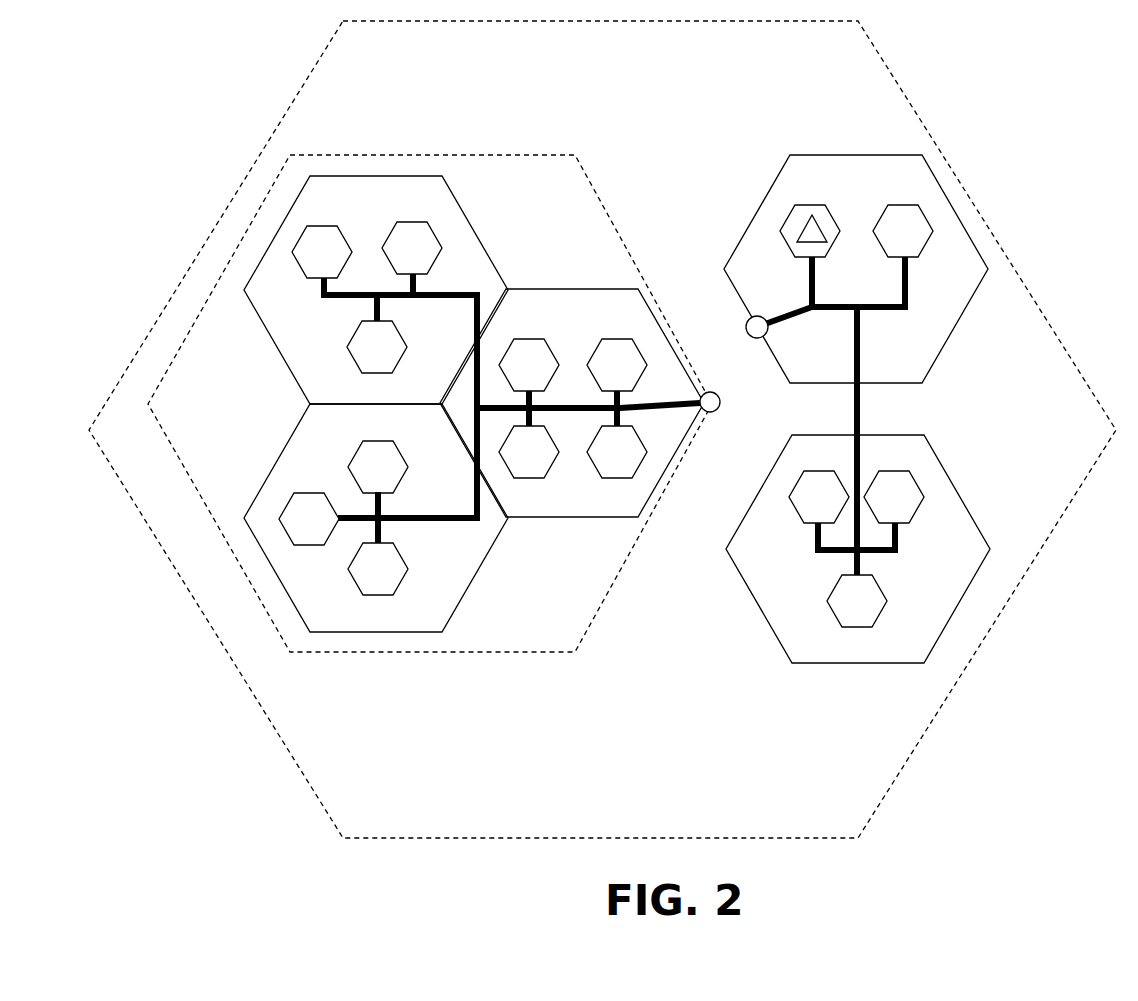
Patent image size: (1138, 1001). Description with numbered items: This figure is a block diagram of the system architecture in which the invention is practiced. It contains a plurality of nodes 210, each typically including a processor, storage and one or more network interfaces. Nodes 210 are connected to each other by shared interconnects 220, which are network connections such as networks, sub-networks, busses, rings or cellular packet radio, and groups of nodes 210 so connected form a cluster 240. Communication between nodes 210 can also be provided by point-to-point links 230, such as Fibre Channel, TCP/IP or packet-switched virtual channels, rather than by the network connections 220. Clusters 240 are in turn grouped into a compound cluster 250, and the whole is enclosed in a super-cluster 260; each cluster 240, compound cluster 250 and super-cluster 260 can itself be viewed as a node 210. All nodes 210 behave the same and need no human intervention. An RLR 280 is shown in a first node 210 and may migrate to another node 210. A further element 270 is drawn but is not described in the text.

The node 210 is at (438, 242).
The shared interconnect 220 is at (475, 293).
The link 230 is at (731, 370).
The cluster 240 is at (930, 367).
The compound cluster 250 is at (607, 212).
The super-cluster 260 is at (1020, 582).
The router node 270 is at (746, 326).
The RLR 280 is at (813, 217).